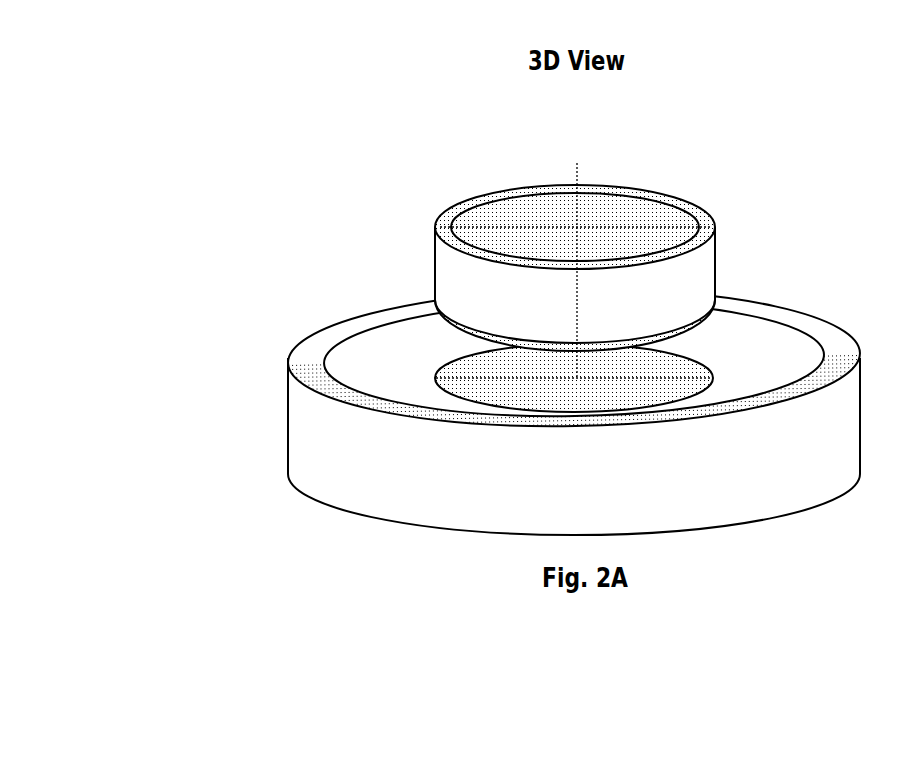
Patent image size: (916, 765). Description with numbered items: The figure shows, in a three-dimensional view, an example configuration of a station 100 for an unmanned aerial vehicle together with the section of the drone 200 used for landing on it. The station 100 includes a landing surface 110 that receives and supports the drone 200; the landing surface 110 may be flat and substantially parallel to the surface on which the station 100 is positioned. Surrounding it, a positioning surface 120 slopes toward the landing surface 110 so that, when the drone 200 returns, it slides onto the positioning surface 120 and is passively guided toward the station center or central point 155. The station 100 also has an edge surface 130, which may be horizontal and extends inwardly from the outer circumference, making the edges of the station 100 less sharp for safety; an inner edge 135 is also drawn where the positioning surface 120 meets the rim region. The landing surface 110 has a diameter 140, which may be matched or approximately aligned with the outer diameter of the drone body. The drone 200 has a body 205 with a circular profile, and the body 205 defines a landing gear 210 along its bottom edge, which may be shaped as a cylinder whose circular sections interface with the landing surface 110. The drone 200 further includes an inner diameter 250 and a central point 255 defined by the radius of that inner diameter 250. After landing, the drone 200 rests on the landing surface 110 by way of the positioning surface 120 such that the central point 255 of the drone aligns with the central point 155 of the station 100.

The station 100 is at (492, 384).
The landing surface 110 is at (300, 340).
The positioning surface 120 is at (733, 327).
The edge surface 130 is at (840, 352).
The base inner rim 135 is at (805, 377).
The diameter of the station landing surface 140 is at (540, 378).
The central point 155 is at (576, 360).
The drone 200 is at (555, 201).
The body 205 is at (716, 240).
The landing gear 210 is at (435, 230).
The inner diameter 250 is at (653, 225).
The central point 255 is at (575, 173).